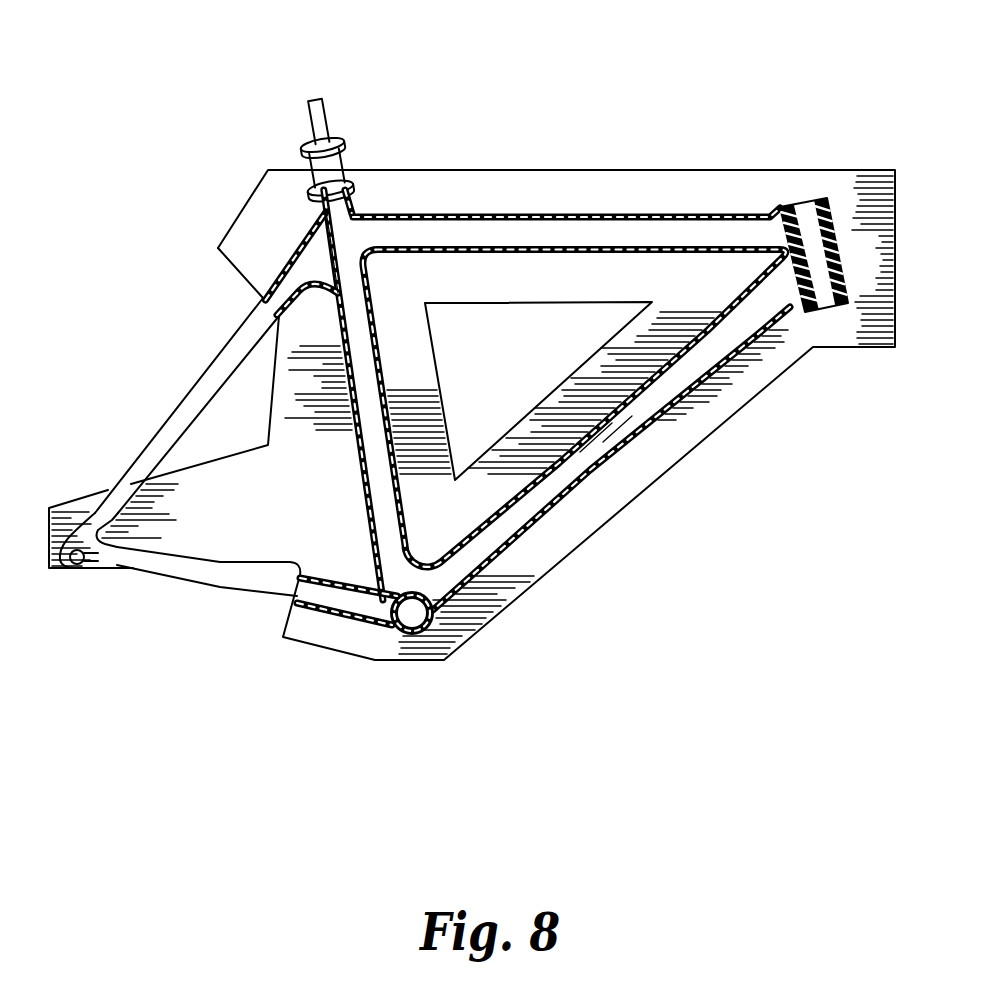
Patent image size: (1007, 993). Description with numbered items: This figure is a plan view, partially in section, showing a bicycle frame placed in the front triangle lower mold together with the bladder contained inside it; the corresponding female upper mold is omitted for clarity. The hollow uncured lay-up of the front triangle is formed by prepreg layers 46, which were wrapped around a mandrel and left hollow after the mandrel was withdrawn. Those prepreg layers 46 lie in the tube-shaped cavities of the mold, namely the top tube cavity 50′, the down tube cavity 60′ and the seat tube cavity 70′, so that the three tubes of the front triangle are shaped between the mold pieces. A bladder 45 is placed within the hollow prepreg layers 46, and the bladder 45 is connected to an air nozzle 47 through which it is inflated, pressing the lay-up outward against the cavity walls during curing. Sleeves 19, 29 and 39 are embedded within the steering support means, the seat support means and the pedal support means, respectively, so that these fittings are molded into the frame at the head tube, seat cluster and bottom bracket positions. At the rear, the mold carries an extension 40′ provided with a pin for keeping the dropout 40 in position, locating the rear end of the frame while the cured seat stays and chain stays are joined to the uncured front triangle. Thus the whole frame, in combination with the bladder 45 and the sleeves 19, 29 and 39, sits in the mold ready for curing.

The air nozzle 47 is at (320, 117).
The top tube cavity 50′ is at (466, 212).
The sleeve 19 is at (805, 218).
The sleeve 29 is at (320, 208).
The seat tube cavity 70′ is at (378, 373).
The extension 40′ is at (192, 490).
The rear dropout 40 is at (90, 570).
The sleeve 39 is at (418, 618).
The bladder 45 is at (578, 478).
The prepreg layers 46 is at (610, 465).
The down tube cavity 60′ is at (652, 442).